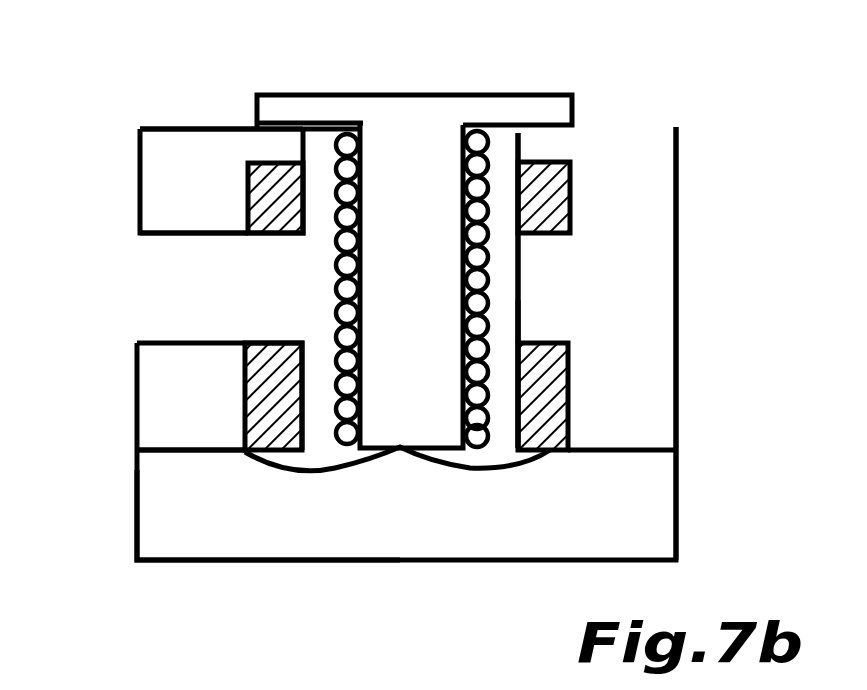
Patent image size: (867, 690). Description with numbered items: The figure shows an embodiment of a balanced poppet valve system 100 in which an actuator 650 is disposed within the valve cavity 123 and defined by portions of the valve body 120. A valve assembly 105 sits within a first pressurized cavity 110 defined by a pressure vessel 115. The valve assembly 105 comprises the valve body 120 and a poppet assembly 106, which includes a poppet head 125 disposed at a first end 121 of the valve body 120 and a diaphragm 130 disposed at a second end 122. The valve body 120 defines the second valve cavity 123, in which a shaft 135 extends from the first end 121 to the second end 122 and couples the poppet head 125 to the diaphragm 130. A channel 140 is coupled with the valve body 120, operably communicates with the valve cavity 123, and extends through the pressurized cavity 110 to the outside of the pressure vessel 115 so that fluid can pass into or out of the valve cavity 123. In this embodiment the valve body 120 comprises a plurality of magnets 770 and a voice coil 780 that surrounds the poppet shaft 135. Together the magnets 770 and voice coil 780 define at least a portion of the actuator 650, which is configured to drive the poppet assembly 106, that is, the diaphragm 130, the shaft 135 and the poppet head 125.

The balanced poppet valve system 100 is at (138, 62).
The valve assembly 105 is at (648, 80).
The poppet assembly 106 is at (505, 350).
The first pressurized cavity 110 is at (512, 530).
The pressure vessel 115 is at (130, 532).
The valve body 120 is at (680, 205).
The first end 121 is at (178, 125).
The second end 122 is at (223, 455).
The valve cavity 123 is at (505, 292).
The poppet head 125 is at (414, 93).
The diaphragm 130 is at (462, 473).
The shaft 135 is at (334, 272).
The channel 140 is at (155, 238).
The actuator 650 is at (504, 178).
The magnets 770 is at (246, 227).
The voice coil 780 is at (333, 290).